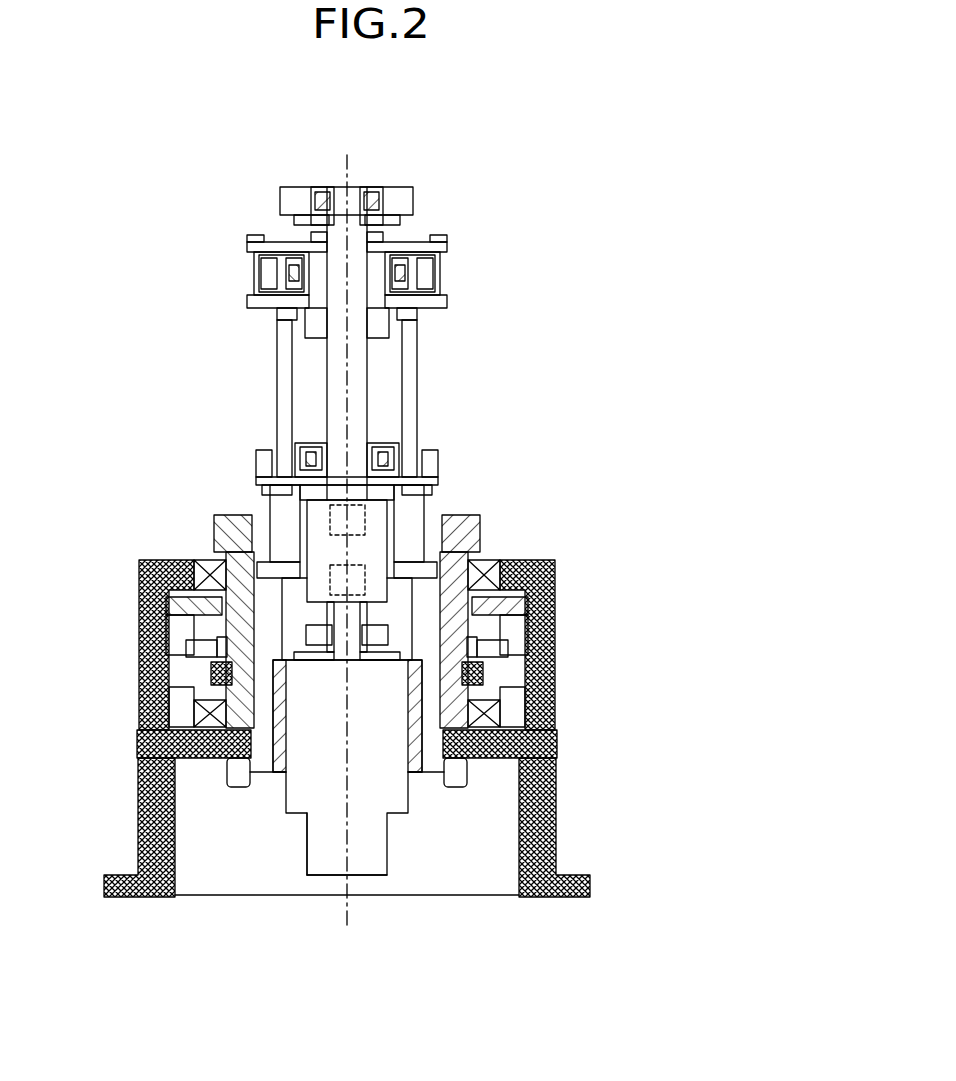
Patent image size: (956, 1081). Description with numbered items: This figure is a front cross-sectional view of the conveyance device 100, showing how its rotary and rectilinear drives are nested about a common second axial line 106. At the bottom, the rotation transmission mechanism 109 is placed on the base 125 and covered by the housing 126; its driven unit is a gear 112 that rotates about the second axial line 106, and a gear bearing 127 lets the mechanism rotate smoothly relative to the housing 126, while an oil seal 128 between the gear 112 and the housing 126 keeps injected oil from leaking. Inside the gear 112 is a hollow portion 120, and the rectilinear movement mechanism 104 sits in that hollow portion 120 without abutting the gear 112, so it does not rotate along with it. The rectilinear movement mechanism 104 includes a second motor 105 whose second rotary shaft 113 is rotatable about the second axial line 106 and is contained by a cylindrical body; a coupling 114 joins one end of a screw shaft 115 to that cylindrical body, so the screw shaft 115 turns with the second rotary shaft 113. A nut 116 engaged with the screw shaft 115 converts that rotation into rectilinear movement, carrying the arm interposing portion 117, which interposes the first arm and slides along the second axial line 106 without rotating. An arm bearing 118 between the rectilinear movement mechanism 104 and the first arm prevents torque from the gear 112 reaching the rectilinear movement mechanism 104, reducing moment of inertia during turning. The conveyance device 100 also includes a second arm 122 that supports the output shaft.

The conveyance device 100 is at (463, 178).
The rectilinear movement mechanism 104 is at (387, 855).
The second motor 105 is at (333, 847).
The second axial line 106 is at (347, 823).
The rotation transmission mechanism 109 is at (182, 618).
The gear 112 is at (183, 607).
The second rotary shaft 113 is at (337, 605).
The coupling 114 is at (375, 530).
The screw shaft 115 is at (355, 388).
The nut 116 is at (378, 262).
The arm interposing portion 117 is at (433, 244).
The arm bearing 118 is at (398, 270).
The hollow portion 120 is at (258, 718).
The second arm 122 is at (467, 528).
The base 125 is at (540, 812).
The housing 126 is at (540, 712).
The gear bearing 127 is at (483, 672).
The oil seal 128 is at (490, 575).